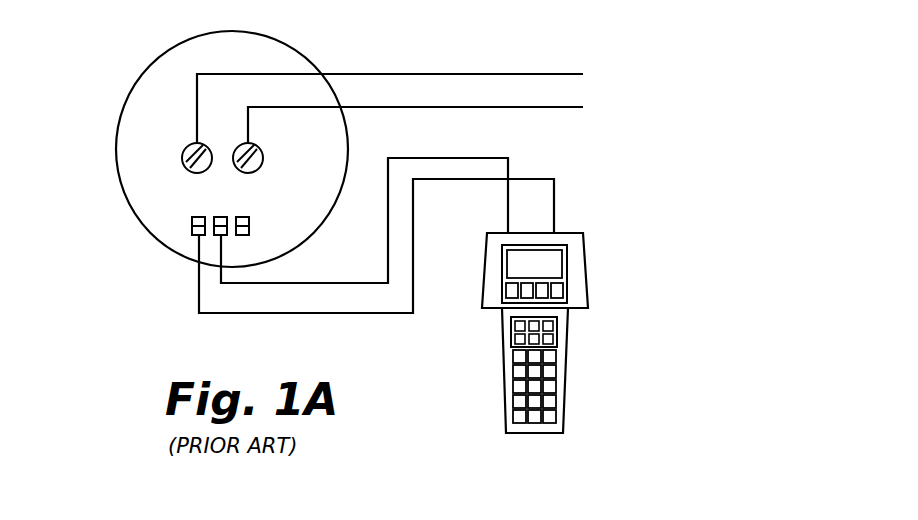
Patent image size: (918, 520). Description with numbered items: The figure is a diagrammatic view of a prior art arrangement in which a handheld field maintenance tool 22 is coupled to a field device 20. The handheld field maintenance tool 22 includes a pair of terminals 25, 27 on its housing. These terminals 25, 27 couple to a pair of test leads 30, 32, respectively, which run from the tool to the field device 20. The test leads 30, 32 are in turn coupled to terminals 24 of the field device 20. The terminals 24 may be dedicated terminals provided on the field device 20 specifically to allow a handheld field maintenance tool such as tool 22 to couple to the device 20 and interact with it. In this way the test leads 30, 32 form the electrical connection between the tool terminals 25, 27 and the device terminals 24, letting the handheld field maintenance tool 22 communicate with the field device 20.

The field device 20 is at (118, 128).
The terminals 24 is at (214, 217).
The test lead 30 is at (247, 285).
The test lead 32 is at (290, 315).
The handheld field maintenance tool 22 is at (523, 312).
The terminal 25 is at (507, 232).
The terminal 27 is at (572, 233).